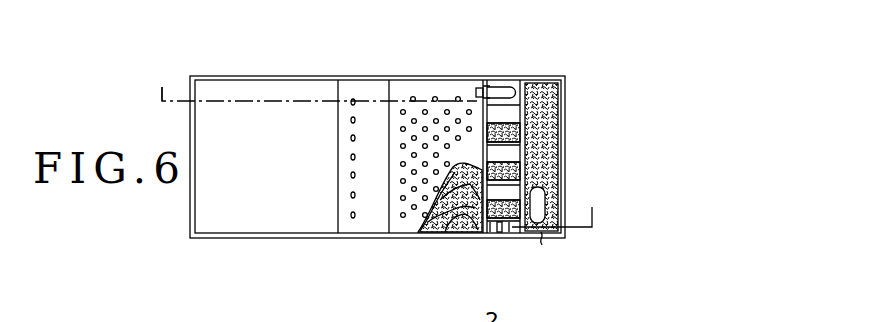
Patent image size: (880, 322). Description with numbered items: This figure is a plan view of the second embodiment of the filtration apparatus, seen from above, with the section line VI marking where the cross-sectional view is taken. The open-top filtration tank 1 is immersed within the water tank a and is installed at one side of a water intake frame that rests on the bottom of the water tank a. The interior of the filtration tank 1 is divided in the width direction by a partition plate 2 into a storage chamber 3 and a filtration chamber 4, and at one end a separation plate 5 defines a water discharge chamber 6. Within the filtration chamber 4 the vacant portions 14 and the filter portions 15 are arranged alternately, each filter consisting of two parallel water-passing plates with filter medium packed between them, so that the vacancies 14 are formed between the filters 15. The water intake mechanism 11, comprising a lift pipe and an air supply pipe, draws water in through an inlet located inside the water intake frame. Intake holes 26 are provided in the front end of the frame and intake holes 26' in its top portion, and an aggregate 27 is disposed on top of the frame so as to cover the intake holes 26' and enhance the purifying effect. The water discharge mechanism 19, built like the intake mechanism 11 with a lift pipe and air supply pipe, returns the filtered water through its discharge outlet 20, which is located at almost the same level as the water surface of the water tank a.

The filtration tank 1 is at (562, 100).
The partition plate 2 is at (553, 131).
The storage chamber 3 is at (545, 163).
The filtration chamber 4 is at (500, 228).
The separation plate 5 is at (517, 110).
The water discharge chamber 6 is at (495, 92).
The water intake mechanism 11 is at (543, 197).
The vacant portions 14 is at (513, 137).
The filter portions 15 is at (508, 222).
The water discharge mechanism 19 is at (497, 88).
The discharge outlet 20 is at (477, 91).
The intake holes 26 is at (343, 156).
The intake holes 26' is at (436, 129).
The aggregate 27 is at (446, 225).
The water tank a is at (340, 238).
The section line VI is at (378, 154).